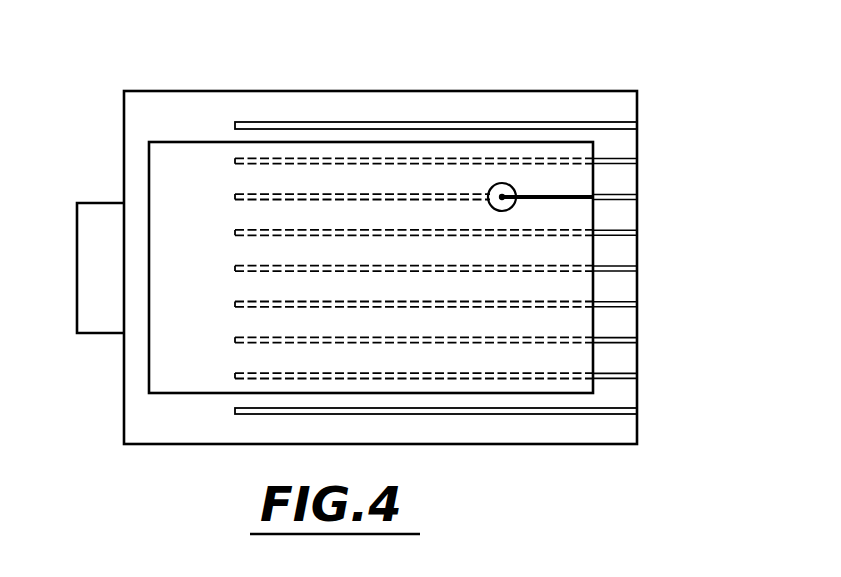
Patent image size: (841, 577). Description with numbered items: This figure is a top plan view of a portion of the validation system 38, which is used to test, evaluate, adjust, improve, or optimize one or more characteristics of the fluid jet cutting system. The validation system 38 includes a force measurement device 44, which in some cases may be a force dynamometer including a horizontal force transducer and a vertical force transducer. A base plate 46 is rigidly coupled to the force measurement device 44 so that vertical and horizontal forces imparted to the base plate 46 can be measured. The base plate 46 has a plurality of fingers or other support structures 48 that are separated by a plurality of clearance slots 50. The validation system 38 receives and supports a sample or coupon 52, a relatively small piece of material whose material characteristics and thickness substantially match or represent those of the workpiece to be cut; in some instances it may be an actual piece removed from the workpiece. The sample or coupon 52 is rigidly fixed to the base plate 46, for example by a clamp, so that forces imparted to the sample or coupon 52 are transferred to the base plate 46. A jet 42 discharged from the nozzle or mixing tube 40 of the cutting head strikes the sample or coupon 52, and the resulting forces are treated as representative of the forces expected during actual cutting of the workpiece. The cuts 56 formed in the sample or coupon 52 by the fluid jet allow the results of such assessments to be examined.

The validation system 38 is at (690, 74).
The mixing tube or nozzle 40 is at (489, 186).
The jet 42 is at (502, 194).
The force measurement device 44 is at (87, 258).
The base plate 46 is at (178, 90).
The fingers or support structures 48 is at (628, 175).
The clearance slots 50 is at (613, 342).
The sample or coupon 52 is at (180, 395).
The cuts 56 is at (552, 194).